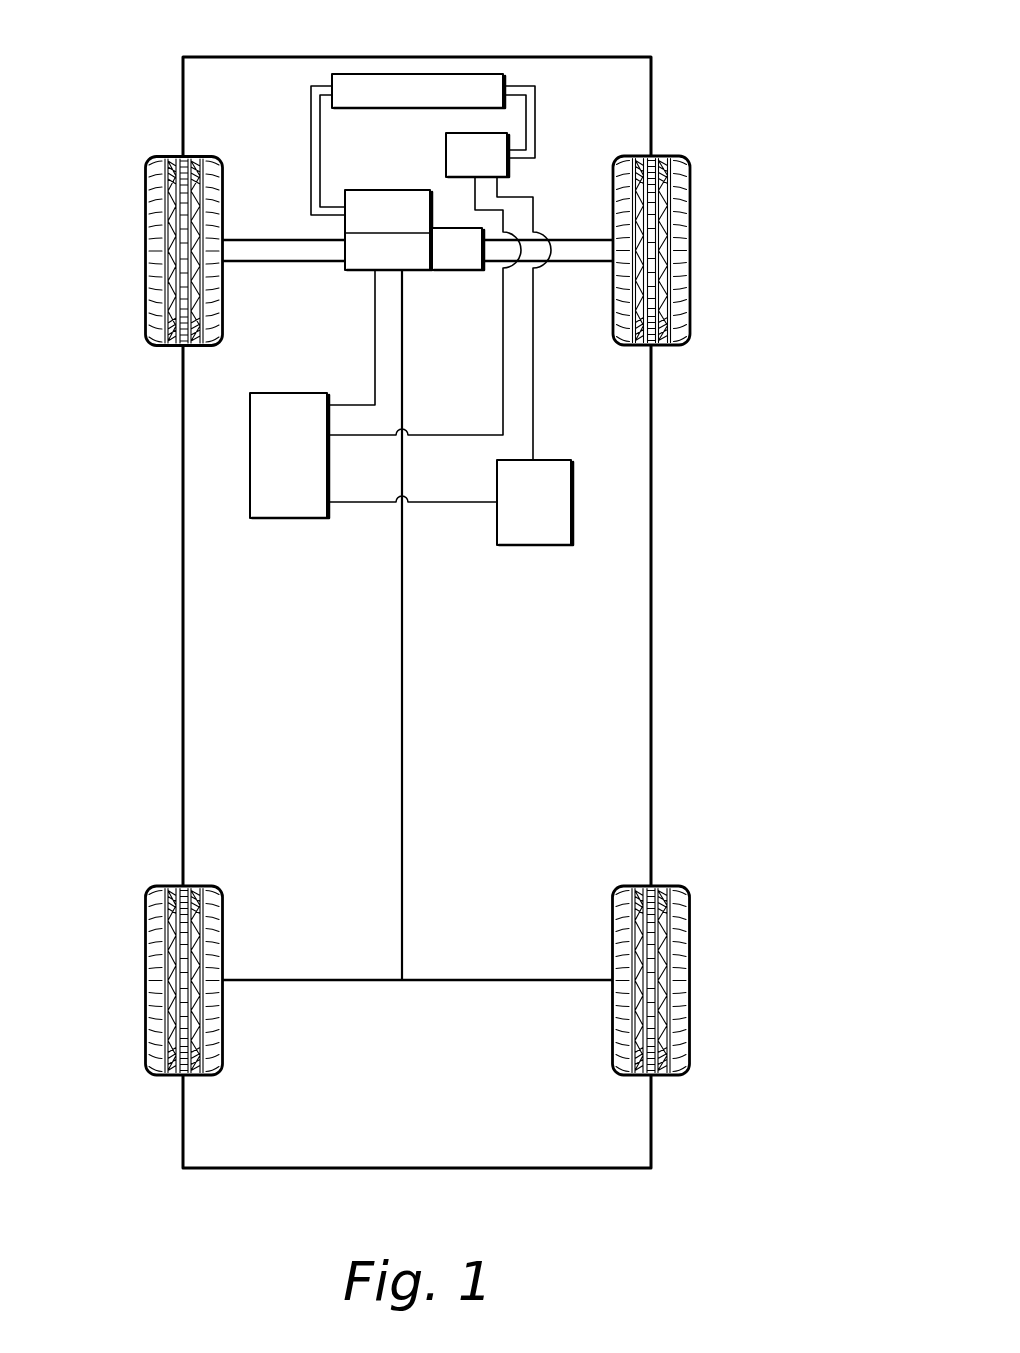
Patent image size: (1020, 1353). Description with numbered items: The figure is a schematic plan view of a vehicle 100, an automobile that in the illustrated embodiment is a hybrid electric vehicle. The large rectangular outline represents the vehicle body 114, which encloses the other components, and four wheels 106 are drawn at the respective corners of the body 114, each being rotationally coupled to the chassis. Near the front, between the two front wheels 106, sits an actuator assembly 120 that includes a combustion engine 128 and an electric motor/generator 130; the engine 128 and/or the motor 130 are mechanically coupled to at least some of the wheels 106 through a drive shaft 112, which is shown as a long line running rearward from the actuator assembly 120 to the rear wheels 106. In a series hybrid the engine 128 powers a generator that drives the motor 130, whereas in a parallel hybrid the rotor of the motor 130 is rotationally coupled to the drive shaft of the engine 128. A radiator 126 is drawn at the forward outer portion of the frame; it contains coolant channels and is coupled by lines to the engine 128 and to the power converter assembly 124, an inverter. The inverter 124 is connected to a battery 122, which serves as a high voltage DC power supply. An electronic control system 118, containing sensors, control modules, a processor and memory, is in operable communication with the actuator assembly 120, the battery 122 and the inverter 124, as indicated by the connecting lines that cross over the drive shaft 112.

The vehicle 100 is at (433, 586).
The wheels 106 is at (155, 230).
The driveshaft 112 is at (402, 822).
The vehicle body 114 is at (183, 459).
The electronic control system 118 is at (305, 462).
The actuator assembly 120 is at (414, 288).
The battery 122 is at (553, 515).
The power converter assembly 124 is at (494, 165).
The radiator 126 is at (381, 82).
The combustion engine 128 is at (409, 223).
The electric motor/generator 130 is at (476, 259).